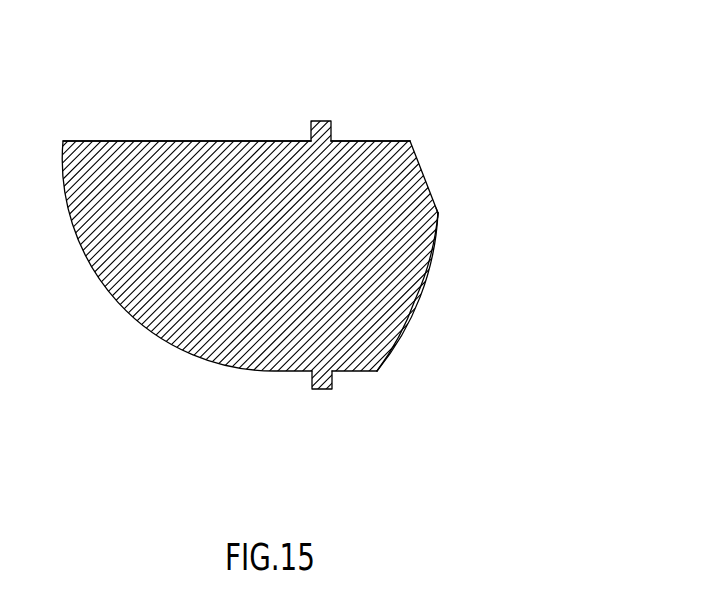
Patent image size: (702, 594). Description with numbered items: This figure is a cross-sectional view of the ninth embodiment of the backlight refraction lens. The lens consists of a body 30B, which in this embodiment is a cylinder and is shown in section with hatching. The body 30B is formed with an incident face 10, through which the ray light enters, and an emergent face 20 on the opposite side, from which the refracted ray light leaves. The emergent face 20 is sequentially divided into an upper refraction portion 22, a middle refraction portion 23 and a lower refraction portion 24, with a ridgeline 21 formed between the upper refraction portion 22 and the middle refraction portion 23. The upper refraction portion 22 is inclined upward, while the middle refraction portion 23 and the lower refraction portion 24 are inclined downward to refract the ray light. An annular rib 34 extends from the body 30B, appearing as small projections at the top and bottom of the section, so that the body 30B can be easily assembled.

The incident face 10 is at (130, 312).
The emergent face 20 is at (543, 207).
The ridgeline 21 is at (438, 213).
The upper refraction portion 22 is at (423, 173).
The middle refraction portion 23 is at (424, 272).
The lower refraction portion 24 is at (402, 335).
The body 30B is at (284, 141).
The annular rib 34 is at (318, 121).